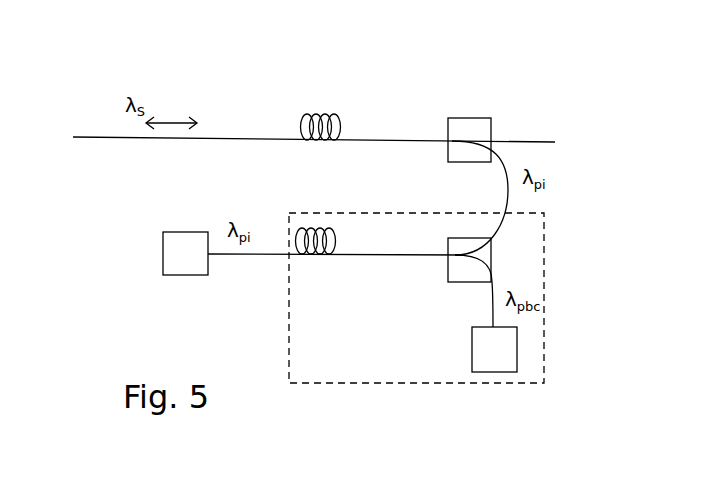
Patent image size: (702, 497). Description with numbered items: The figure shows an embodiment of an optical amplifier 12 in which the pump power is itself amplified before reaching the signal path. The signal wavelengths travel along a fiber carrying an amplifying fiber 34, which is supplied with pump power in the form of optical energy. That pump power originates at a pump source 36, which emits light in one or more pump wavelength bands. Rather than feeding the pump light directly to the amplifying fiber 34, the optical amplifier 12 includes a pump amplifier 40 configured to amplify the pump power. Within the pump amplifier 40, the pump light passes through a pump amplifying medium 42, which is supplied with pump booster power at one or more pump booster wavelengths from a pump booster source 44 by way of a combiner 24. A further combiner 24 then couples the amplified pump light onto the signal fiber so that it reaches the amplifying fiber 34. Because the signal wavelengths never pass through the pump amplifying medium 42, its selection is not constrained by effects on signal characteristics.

The optical amplifier 12 is at (623, 323).
The combiner 24 is at (483, 118).
The amplifying fiber 34 is at (325, 110).
The pump source 36 is at (172, 275).
The pump amplifier 40 is at (545, 282).
The pump amplifying medium 42 is at (325, 226).
The pump booster source 44 is at (472, 355).